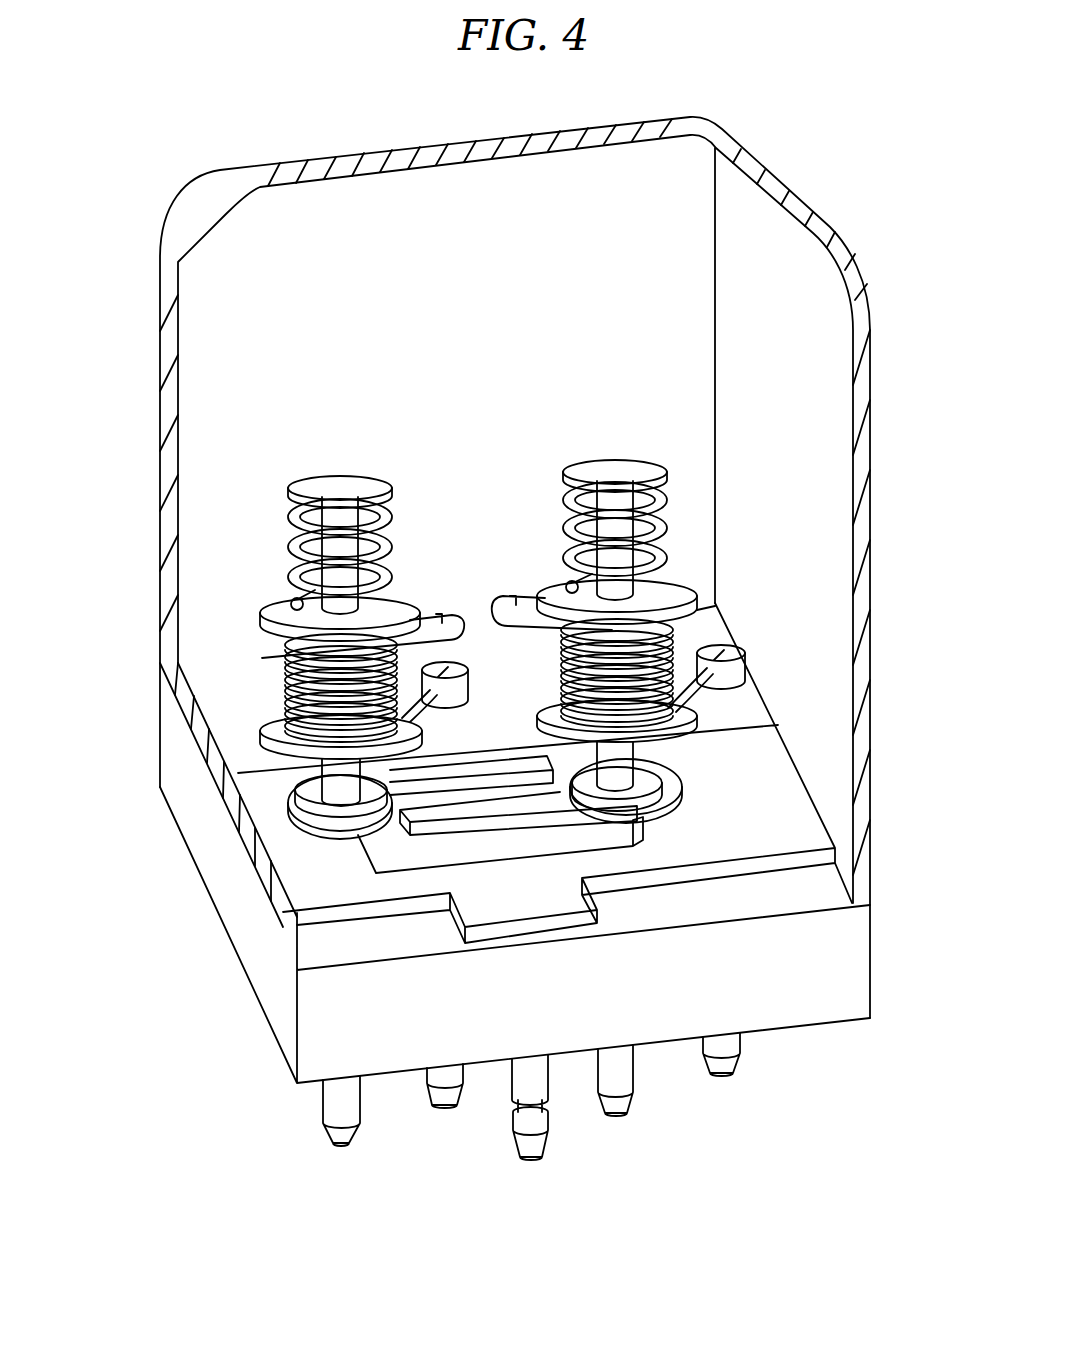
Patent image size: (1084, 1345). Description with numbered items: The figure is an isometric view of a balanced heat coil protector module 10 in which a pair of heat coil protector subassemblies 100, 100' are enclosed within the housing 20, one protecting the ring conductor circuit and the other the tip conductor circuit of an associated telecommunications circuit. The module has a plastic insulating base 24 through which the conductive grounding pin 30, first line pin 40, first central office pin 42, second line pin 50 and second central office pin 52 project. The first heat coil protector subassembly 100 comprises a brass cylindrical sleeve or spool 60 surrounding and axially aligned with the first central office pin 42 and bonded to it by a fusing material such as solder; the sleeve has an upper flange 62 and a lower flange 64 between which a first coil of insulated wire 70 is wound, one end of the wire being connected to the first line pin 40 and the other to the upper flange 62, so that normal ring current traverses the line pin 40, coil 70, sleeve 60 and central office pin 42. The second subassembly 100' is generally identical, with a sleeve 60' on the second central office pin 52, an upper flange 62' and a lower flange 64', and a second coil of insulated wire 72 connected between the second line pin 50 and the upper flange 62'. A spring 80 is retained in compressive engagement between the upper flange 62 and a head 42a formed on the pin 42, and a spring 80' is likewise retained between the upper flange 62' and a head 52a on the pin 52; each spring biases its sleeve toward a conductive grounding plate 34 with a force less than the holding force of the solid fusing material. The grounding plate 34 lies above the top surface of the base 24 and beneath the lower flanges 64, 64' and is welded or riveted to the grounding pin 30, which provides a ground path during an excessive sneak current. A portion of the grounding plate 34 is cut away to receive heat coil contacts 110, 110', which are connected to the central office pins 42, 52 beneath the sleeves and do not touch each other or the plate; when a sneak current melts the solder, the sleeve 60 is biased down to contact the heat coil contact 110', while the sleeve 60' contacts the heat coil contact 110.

The protector module 10 is at (899, 496).
The housing 20 is at (878, 428).
The base 24 is at (835, 966).
The grounding pin 30 is at (548, 1148).
The grounding plate 34 is at (537, 900).
The first line pin 40 is at (466, 666).
The first central office pin 42 is at (325, 1137).
The head 42a is at (370, 485).
The second line pin 50 is at (739, 669).
The second central office pin 52 is at (633, 1101).
The head 52a is at (590, 461).
The sleeve 60 is at (241, 688).
The sleeve 60' is at (761, 640).
The upper flange 62 is at (252, 612).
The upper flange 62' is at (629, 574).
The lower flange 64 is at (253, 728).
The lower flange 64' is at (592, 709).
The first coil of insulated wire 70 is at (447, 612).
The second coil of insulated wire 72 is at (505, 598).
The spring 80 is at (372, 547).
The spring 80' is at (586, 529).
The first heat coil protector subassembly 100 is at (354, 618).
The second heat coil protector subassembly 100' is at (636, 600).
The heat coil contact 110 is at (471, 760).
The heat coil contact 110' is at (518, 824).